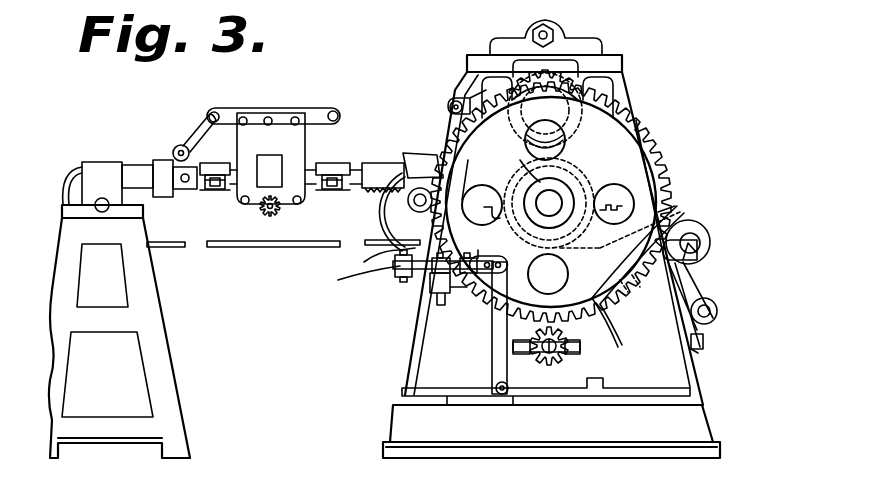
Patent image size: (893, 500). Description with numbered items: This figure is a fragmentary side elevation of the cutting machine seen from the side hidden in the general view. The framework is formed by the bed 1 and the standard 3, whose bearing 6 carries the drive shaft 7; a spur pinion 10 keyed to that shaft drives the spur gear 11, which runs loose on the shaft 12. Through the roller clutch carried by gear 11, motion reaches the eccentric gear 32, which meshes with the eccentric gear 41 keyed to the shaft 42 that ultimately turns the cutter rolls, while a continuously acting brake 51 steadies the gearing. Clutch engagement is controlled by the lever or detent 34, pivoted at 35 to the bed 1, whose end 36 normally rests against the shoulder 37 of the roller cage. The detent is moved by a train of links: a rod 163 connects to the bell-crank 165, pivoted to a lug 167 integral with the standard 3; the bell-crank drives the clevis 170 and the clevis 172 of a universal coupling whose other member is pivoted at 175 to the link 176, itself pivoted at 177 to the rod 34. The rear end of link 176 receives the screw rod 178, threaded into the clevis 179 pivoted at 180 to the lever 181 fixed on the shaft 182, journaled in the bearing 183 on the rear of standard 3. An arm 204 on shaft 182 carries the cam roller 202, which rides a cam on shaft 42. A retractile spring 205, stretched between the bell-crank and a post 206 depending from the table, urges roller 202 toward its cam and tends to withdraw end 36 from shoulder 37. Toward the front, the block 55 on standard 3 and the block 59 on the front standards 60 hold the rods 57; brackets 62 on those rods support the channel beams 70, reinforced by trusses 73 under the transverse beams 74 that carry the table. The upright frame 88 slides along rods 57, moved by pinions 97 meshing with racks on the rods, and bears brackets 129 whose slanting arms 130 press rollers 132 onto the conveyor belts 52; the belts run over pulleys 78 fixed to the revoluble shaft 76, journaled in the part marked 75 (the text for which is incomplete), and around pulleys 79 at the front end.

The bed 1 is at (697, 424).
The standard 3 is at (620, 80).
The bearing 6 is at (572, 352).
The drive shaft 7 is at (556, 338).
The spur pinion 10 is at (548, 360).
The spur gear 11 is at (628, 137).
The shaft 12 is at (550, 203).
The eccentric gear 32 is at (520, 156).
The lever 34 is at (497, 365).
The pivot 35 is at (496, 387).
The end of lever 36 is at (486, 213).
The shoulder 37 is at (512, 190).
The eccentric gear 41 is at (622, 310).
The shaft 42 is at (620, 252).
The brake 51 is at (598, 52).
The conveyor belts 52 is at (237, 248).
The block 55 is at (420, 158).
The rods 57 is at (136, 168).
The block 59 is at (103, 164).
The standards 60 is at (145, 294).
The brackets 62 is at (166, 198).
The channel beams 70 is at (217, 165).
The trusses 73 is at (166, 170).
The transverse beams 74 is at (223, 191).
The cam disc 75 is at (400, 222).
The revoluble shaft 76 is at (374, 257).
The pulleys 78 is at (409, 200).
The pulleys 79 is at (78, 188).
The upright frame 88 is at (271, 158).
The pinions 97 is at (268, 211).
The brackets 129 is at (222, 115).
The arm 130 is at (196, 135).
The roller 132 is at (182, 145).
The rod 163 is at (405, 273).
The bell-crank 165 is at (437, 276).
The lug 167 is at (440, 296).
The clevis 170 is at (468, 198).
The clevis 172 is at (484, 258).
The pivot 175 is at (468, 275).
The link 176 is at (518, 282).
The pivot 177 is at (485, 292).
The screw rod 178 is at (667, 213).
The clevis 179 is at (707, 296).
The pivot 180 is at (682, 260).
The lever 181 is at (716, 312).
The shaft 182 is at (712, 322).
The bearing 183 is at (696, 351).
The cam roller 202 is at (705, 240).
The arm 204 is at (700, 246).
The retractile spring 205 is at (350, 277).
The post 206 is at (450, 118).